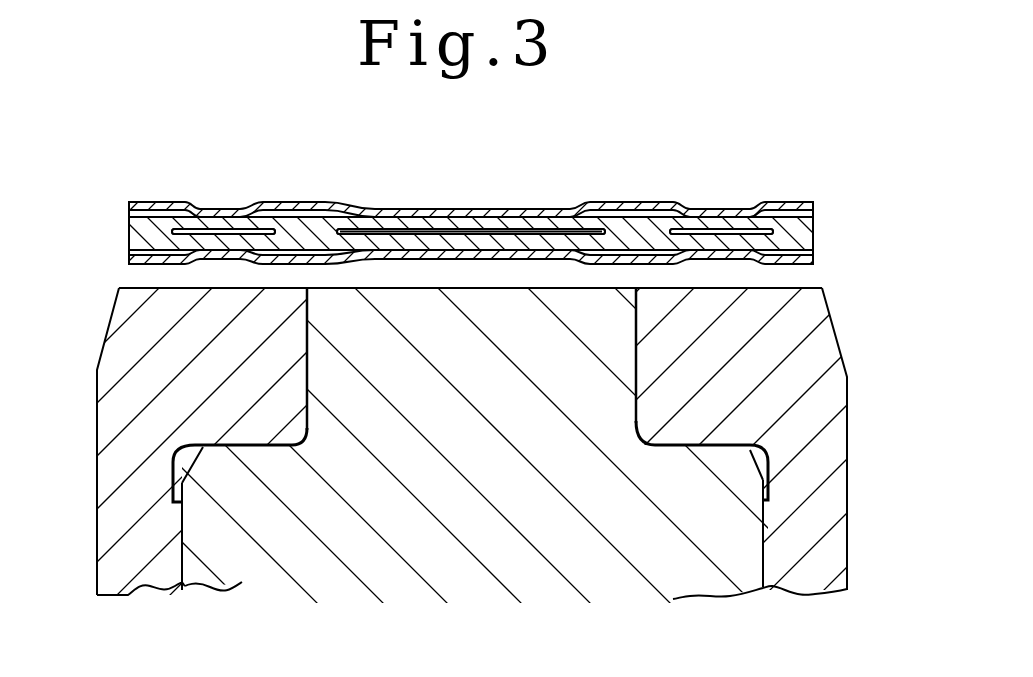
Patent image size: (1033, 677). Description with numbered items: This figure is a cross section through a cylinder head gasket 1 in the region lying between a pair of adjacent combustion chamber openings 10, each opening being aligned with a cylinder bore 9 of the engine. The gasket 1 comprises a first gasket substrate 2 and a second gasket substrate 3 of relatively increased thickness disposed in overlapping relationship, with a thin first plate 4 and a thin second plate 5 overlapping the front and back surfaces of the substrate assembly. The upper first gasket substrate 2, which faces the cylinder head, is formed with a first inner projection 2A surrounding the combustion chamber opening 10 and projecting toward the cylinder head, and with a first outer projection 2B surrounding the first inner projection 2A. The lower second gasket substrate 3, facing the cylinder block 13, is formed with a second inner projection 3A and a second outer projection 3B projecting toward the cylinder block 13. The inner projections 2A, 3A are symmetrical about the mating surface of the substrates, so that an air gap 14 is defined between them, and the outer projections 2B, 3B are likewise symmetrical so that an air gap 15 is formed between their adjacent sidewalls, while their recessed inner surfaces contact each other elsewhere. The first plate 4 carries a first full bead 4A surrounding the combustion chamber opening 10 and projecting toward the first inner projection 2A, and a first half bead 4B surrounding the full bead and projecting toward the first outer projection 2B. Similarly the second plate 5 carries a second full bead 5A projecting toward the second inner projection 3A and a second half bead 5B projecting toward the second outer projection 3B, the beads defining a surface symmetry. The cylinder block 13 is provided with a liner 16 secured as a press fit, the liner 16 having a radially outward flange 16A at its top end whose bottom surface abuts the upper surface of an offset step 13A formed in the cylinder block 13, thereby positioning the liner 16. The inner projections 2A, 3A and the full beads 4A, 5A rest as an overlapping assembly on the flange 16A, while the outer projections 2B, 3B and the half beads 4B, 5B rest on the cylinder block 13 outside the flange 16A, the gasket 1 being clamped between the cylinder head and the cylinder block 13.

The cylinder head gasket 1 is at (521, 200).
The first gasket substrate 2 is at (317, 207).
The first inner projection 2A is at (267, 207).
The first outer projection 2B is at (360, 208).
The second gasket substrate 3 is at (328, 262).
The second inner projection 3A is at (248, 258).
The second outer projection 3B is at (385, 252).
The first plate 4 is at (147, 202).
The first full bead 4A is at (213, 209).
The first half bead 4B is at (342, 207).
The second plate 5 is at (129, 260).
The second full bead 5A is at (212, 262).
The second half bead 5B is at (357, 258).
The cylinder bore 9 is at (97, 477).
The combustion chamber opening 10 is at (129, 220).
The cylinder block 13 is at (700, 592).
The offset step 13A is at (268, 446).
The air gap 14 is at (238, 260).
The air gap 15 is at (525, 234).
The liner 16 is at (133, 584).
The flange 16A is at (292, 402).